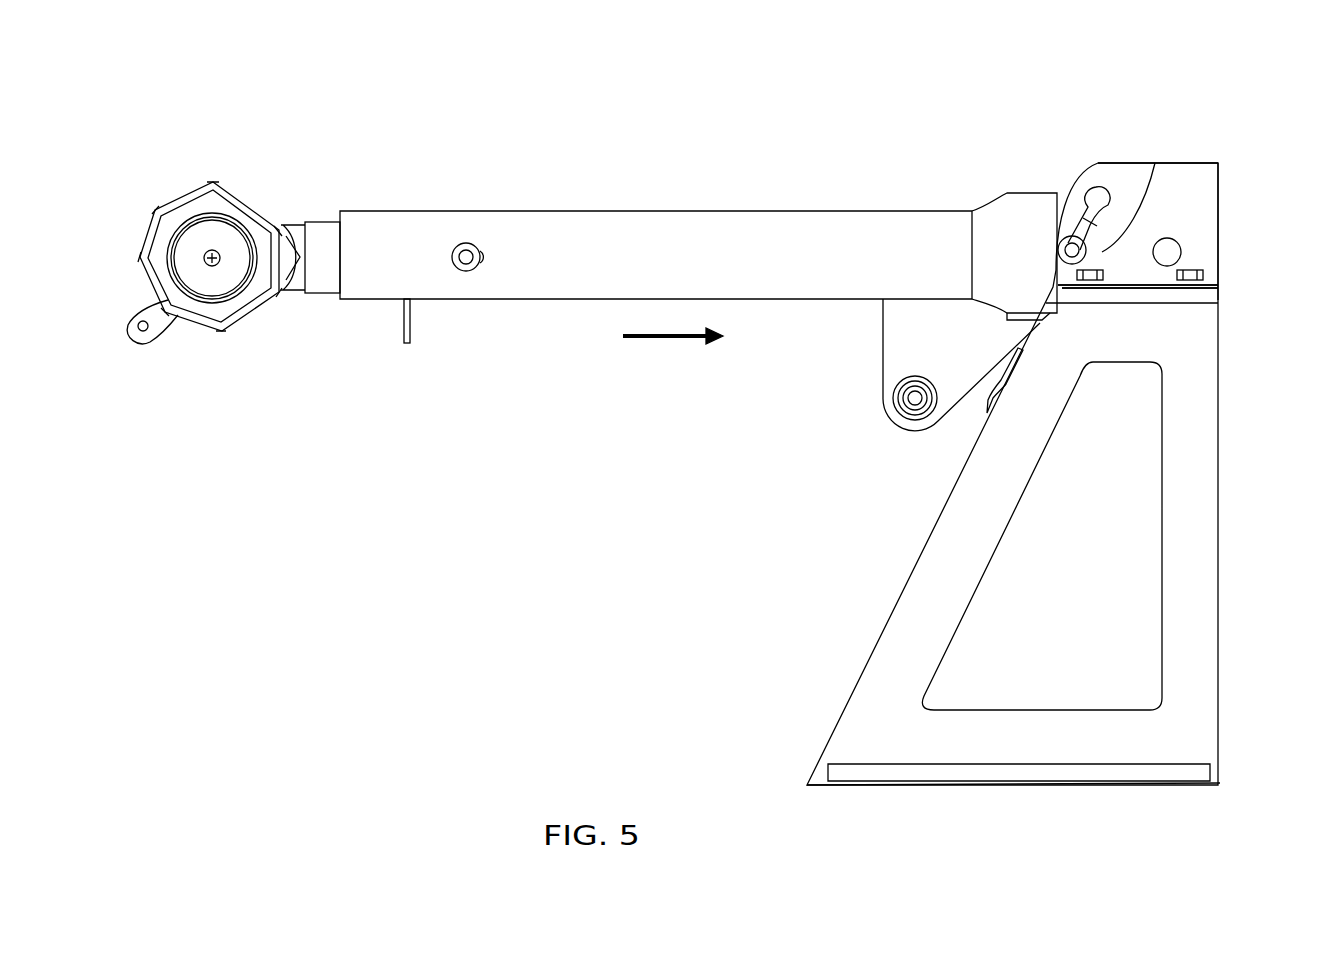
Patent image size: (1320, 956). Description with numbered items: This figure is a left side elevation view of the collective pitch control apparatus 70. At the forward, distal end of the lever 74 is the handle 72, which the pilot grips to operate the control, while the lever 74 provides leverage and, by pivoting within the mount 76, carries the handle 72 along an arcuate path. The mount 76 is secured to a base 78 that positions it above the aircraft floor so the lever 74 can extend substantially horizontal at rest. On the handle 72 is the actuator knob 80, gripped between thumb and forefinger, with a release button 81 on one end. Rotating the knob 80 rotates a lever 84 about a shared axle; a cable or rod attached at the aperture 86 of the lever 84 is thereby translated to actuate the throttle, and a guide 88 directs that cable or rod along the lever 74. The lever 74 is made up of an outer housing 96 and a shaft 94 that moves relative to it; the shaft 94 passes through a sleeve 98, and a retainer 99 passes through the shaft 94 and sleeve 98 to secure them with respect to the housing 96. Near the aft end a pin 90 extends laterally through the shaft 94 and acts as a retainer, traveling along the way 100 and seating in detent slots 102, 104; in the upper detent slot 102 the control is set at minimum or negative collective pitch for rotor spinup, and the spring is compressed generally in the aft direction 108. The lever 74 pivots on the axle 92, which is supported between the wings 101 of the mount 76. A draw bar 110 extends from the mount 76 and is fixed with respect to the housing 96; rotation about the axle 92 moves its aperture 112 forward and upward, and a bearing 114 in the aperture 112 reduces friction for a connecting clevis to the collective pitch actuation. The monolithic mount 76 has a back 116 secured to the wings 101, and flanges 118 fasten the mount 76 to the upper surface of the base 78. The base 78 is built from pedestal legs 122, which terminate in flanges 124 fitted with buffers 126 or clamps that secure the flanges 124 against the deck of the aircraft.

The apparatus 70 is at (160, 110).
The handle 72 is at (188, 271).
The lever 74 is at (698, 226).
The mount 76 is at (1225, 184).
The base 78 is at (1051, 460).
The actuator knob 80 is at (205, 206).
The release button 81 is at (232, 238).
The lever 84 is at (148, 316).
The aperture 86 is at (138, 330).
The guide 88 is at (411, 332).
The pin 90 is at (1060, 248).
The axle 92 is at (1182, 252).
The shaft 94 is at (289, 222).
The housing 96 is at (374, 215).
The sleeve 98 is at (322, 228).
The retainer 99 is at (468, 243).
The way 100 is at (1100, 188).
The wings 101 is at (1199, 168).
The first detent slot 102 is at (1108, 247).
The detent slot 104 is at (1070, 238).
The aft direction 108 is at (667, 340).
The draw bar 110 is at (890, 350).
The aperture 112 is at (912, 426).
The bearing 114 is at (908, 399).
The back 116 is at (1220, 214).
The flanges 118 is at (1200, 283).
The legs 122 is at (915, 584).
The flanges 124 is at (811, 787).
The buffers 126 is at (1200, 772).